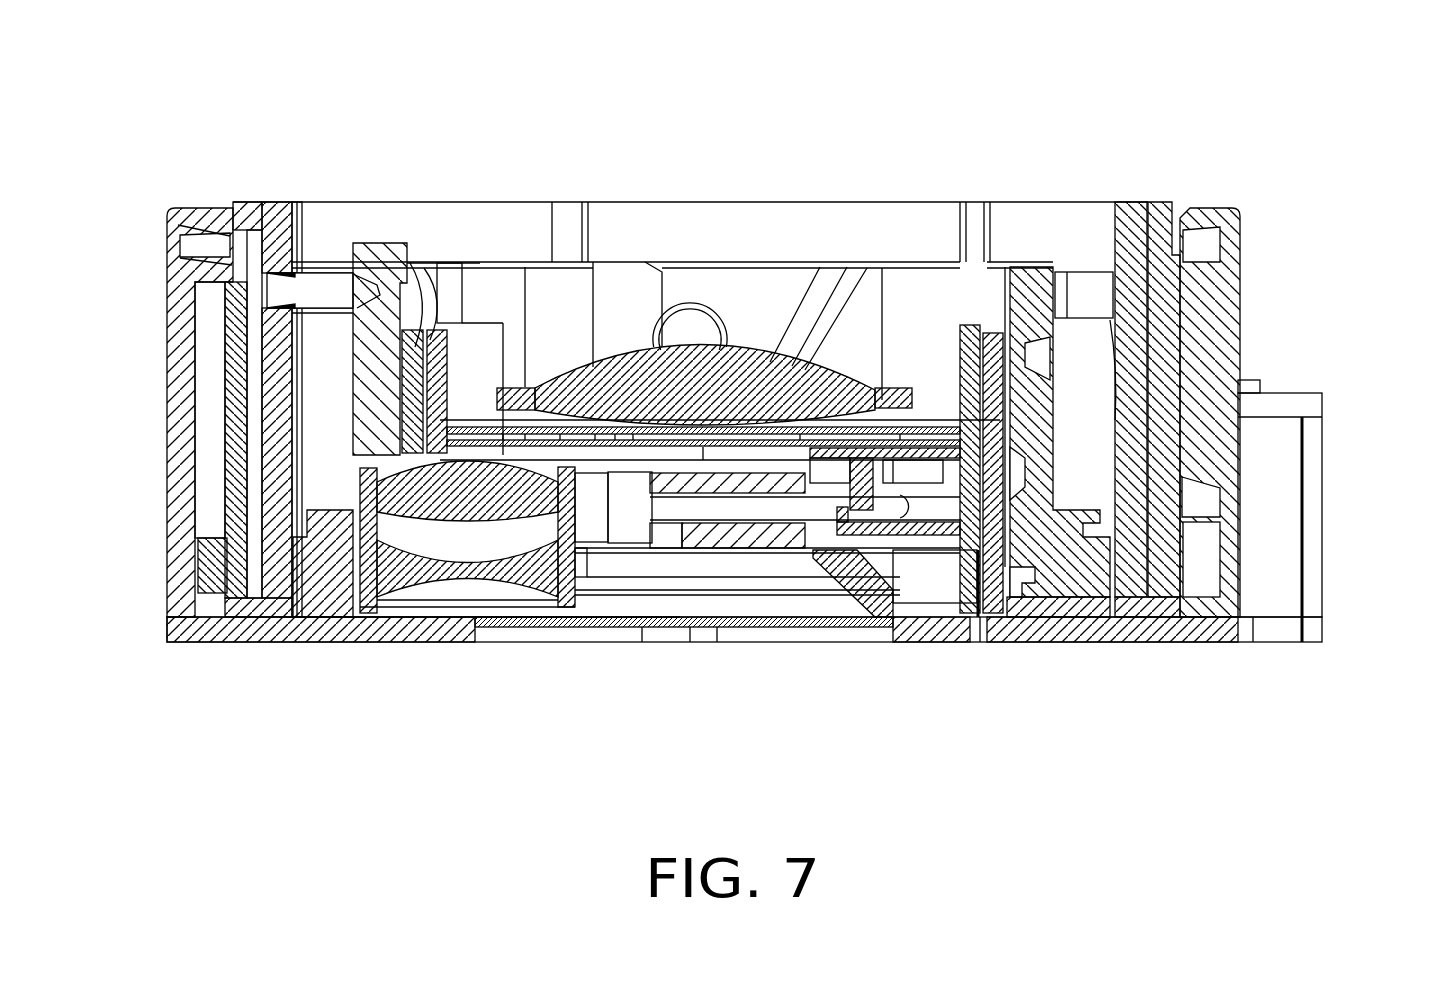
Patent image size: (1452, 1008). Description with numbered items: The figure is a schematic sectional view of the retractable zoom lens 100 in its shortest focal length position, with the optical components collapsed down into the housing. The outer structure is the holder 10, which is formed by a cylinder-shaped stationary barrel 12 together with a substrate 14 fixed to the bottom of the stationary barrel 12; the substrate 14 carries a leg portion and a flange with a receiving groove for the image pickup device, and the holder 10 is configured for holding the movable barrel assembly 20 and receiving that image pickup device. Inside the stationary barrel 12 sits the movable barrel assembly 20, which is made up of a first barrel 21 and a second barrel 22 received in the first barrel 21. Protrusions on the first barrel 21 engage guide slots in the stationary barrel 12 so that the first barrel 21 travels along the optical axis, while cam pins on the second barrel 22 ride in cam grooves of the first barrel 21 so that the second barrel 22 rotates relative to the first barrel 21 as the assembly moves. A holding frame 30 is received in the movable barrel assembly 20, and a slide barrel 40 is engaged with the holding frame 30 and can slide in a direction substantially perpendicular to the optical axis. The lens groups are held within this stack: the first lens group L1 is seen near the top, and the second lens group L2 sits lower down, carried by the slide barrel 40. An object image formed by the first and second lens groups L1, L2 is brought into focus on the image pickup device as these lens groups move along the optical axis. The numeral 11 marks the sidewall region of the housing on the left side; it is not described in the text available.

The retractable zoom lens 100 is at (585, 78).
The holder 10 is at (1337, 496).
The first side wall of housing 11 is at (183, 472).
The stationary barrel 12 is at (1232, 340).
The substrate 14 is at (1053, 632).
The movable barrel assembly 20 is at (1155, 118).
The first barrel 21 is at (1123, 215).
The second barrel 22 is at (1027, 295).
The holding frame 30 is at (955, 342).
The slide barrel 40 is at (567, 583).
The first lens group L1 is at (735, 345).
The second lens group L2 is at (472, 485).